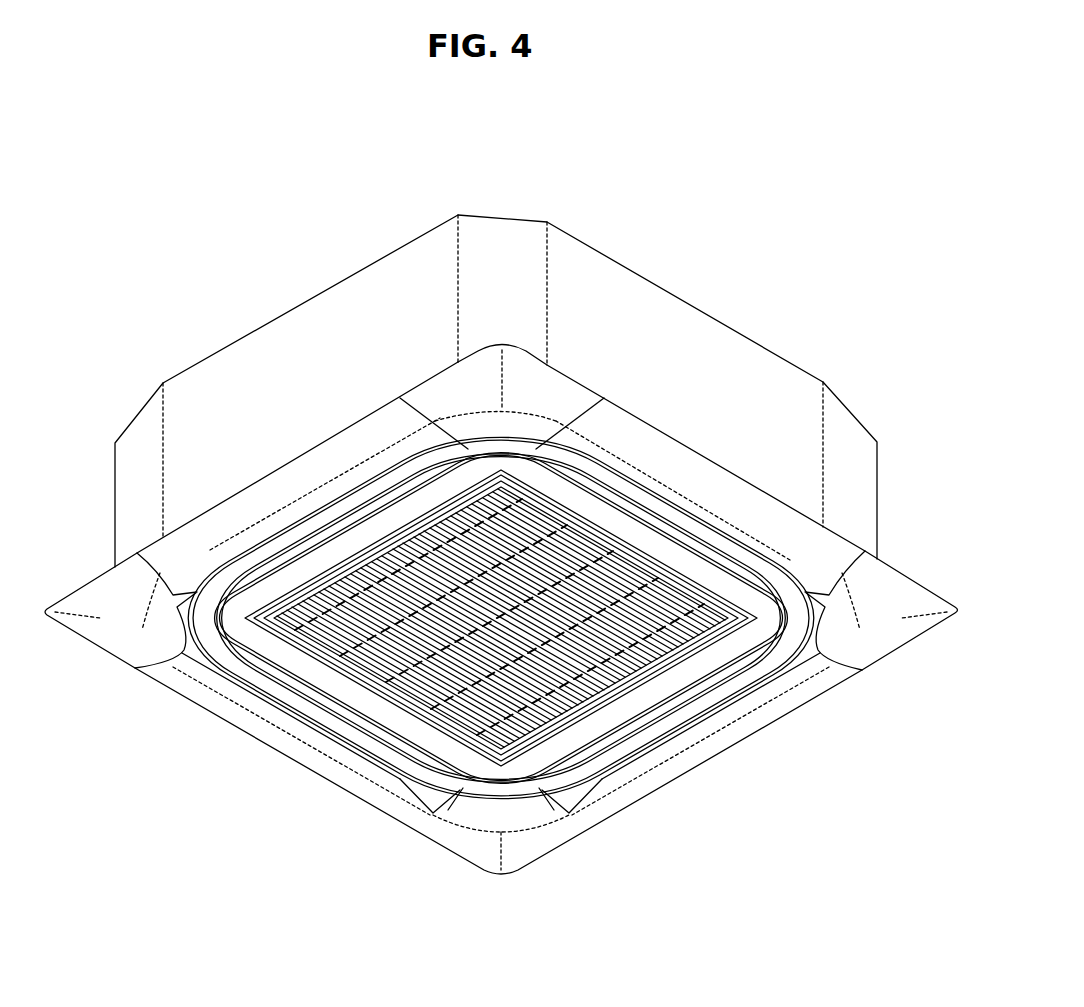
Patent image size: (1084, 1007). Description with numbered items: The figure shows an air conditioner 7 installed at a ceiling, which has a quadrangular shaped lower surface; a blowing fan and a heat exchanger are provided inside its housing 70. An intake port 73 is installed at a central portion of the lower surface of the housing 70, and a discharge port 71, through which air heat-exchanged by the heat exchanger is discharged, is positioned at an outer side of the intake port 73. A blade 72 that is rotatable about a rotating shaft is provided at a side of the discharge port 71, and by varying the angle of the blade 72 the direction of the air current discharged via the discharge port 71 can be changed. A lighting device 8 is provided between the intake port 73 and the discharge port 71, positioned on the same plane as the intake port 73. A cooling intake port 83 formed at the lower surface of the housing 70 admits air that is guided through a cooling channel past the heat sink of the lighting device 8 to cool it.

The air conditioner 7 is at (523, 125).
The housing 70 is at (610, 278).
The discharge port 71 is at (783, 557).
The blade 72 is at (683, 517).
The intake port 73 is at (627, 650).
The lighting device 8 is at (623, 704).
The cooling intake port 83 is at (705, 610).